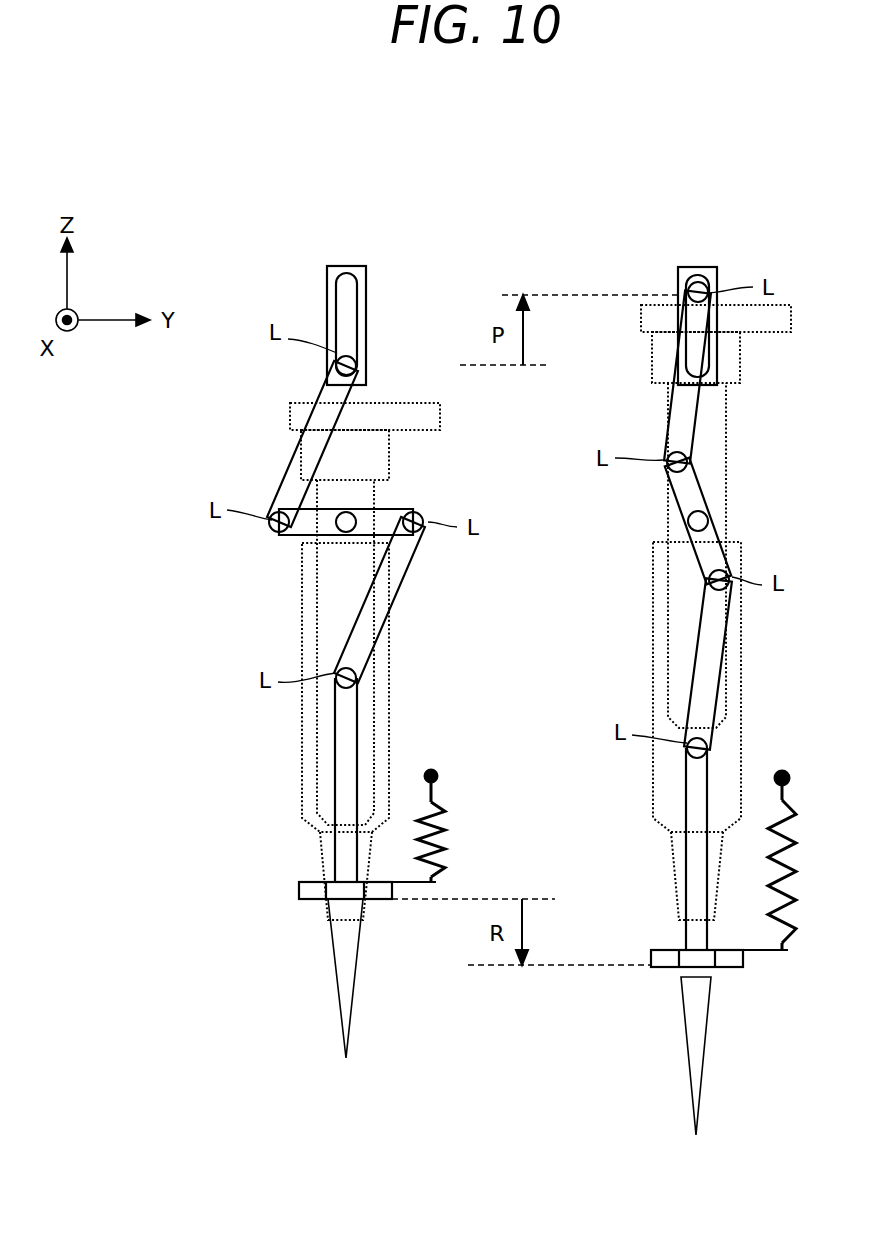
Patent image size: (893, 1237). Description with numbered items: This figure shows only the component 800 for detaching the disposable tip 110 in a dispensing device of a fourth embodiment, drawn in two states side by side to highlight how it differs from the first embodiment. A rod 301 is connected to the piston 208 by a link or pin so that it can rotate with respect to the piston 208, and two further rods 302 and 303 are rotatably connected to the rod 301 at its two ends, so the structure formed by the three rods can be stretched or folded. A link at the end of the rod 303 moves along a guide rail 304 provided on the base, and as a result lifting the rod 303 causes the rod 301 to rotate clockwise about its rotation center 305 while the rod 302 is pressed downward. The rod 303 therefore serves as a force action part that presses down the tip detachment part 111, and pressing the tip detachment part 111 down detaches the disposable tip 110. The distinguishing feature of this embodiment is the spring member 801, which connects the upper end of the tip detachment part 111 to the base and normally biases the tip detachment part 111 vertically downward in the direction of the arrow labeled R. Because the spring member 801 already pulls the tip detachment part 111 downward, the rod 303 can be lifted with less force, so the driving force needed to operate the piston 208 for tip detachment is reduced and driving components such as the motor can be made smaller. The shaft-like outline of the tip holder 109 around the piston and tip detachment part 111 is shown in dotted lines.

The component for detaching the disposable tip 800 is at (520, 264).
The guide rail 304 is at (345, 318).
The rod 303 is at (332, 392).
The rod 301 is at (387, 508).
The rod 302 is at (400, 553).
The rotation center 305 is at (347, 537).
The piston 208 is at (325, 642).
The needle holder 109 is at (300, 793).
The tip detachment part 111 is at (303, 888).
The spring member 801 is at (447, 835).
The disposable tip 110 is at (333, 965).